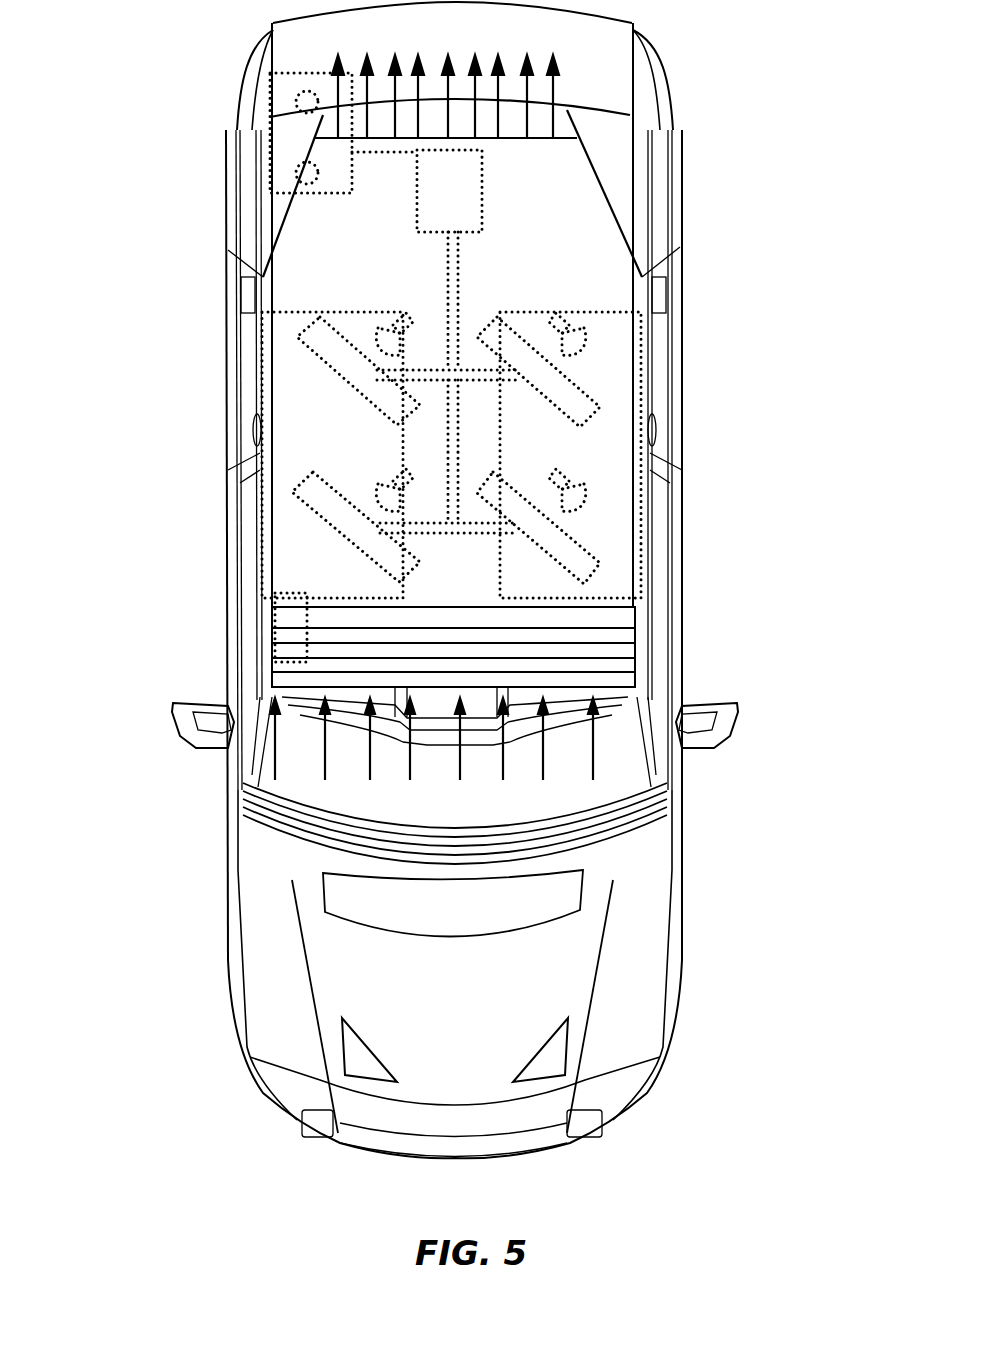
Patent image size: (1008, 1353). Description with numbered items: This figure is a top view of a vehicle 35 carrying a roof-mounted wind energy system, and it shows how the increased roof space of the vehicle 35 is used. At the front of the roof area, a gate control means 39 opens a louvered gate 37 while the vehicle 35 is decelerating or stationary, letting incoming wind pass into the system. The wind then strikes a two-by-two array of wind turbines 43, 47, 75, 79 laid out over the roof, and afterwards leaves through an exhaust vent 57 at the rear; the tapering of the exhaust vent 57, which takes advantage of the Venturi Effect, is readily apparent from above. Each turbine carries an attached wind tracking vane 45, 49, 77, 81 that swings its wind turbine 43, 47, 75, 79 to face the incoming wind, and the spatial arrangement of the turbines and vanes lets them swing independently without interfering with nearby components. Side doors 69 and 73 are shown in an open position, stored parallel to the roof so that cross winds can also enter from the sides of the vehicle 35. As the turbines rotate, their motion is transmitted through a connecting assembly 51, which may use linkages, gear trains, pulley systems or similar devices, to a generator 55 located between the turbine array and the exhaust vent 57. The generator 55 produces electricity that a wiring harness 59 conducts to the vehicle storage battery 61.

The vehicle 35 is at (640, 899).
The louvered gate 37 is at (613, 650).
The gate control means 39 is at (290, 632).
The wind turbine 43 is at (342, 526).
The wind tracking vane 45 is at (380, 496).
The wind turbine 47 is at (343, 357).
The wind tracking vane 49 is at (410, 327).
The connecting assembly 51 is at (448, 277).
The generator 55 is at (483, 205).
The exhaust vent 57 is at (555, 138).
The wiring harness 59 is at (418, 152).
The vehicle storage battery 61 is at (282, 103).
The side door 69 is at (288, 430).
The side door 73 is at (593, 442).
The wind turbine 75 is at (552, 551).
The wind tracking vane 77 is at (588, 496).
The wind turbine 79 is at (573, 405).
The wind tracking vane 81 is at (573, 330).